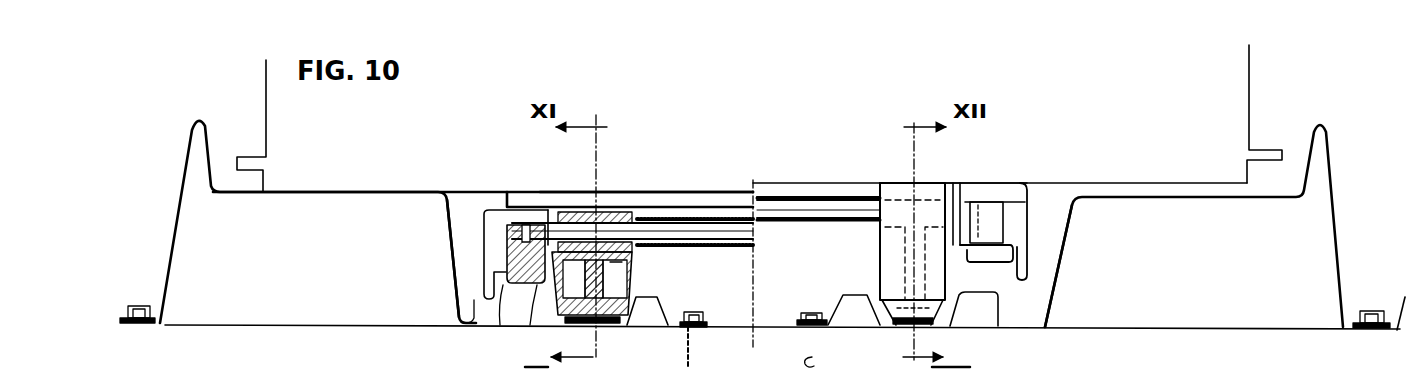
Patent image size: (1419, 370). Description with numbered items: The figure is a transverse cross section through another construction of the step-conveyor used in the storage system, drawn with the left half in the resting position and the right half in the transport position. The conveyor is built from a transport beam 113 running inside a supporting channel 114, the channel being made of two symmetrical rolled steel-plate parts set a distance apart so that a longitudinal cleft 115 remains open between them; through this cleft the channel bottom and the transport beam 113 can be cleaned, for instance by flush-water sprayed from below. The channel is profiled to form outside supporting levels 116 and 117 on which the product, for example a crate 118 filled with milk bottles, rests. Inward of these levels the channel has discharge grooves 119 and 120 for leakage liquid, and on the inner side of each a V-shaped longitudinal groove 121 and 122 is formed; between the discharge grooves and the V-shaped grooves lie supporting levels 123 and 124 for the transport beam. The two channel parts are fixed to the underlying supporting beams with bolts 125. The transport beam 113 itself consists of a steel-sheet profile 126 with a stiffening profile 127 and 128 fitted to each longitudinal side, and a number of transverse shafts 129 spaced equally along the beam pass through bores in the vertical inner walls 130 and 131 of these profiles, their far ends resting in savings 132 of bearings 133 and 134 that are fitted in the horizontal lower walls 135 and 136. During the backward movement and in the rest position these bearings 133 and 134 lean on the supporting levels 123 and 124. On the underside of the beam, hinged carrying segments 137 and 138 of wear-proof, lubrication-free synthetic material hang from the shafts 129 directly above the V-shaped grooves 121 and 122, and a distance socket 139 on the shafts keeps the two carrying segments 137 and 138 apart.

The transport beam 113 is at (612, 184).
The supporting channel 114 is at (152, 248).
The longitudinal cleft 115 is at (768, 328).
The outside supporting level 116 is at (338, 190).
The outside supporting level 117 is at (1197, 195).
The crate 118 is at (1251, 100).
The discharge groove 119 is at (467, 329).
The discharge groove 120 is at (1025, 303).
The V-shaped longitudinal groove 121 is at (586, 327).
The V-shaped longitudinal groove 122 is at (897, 326).
The supporting level 123 is at (528, 313).
The supporting level 124 is at (988, 328).
The bolt 125 is at (693, 340).
The profile 126 is at (673, 203).
The profile 127 is at (478, 240).
The profile 128 is at (1036, 229).
The transverse shaft 129 is at (718, 232).
The vertical inner wall 130 is at (545, 200).
The vertical inner wall 131 is at (965, 196).
The saving 132 is at (503, 203).
The bearing 133 is at (512, 252).
The bearing 134 is at (987, 218).
The horizontal lower wall 135 is at (478, 312).
The horizontal lower wall 136 is at (1013, 233).
The carrying segment 137 is at (636, 274).
The carrying segment 138 is at (872, 268).
The distance socket 139 is at (706, 207).